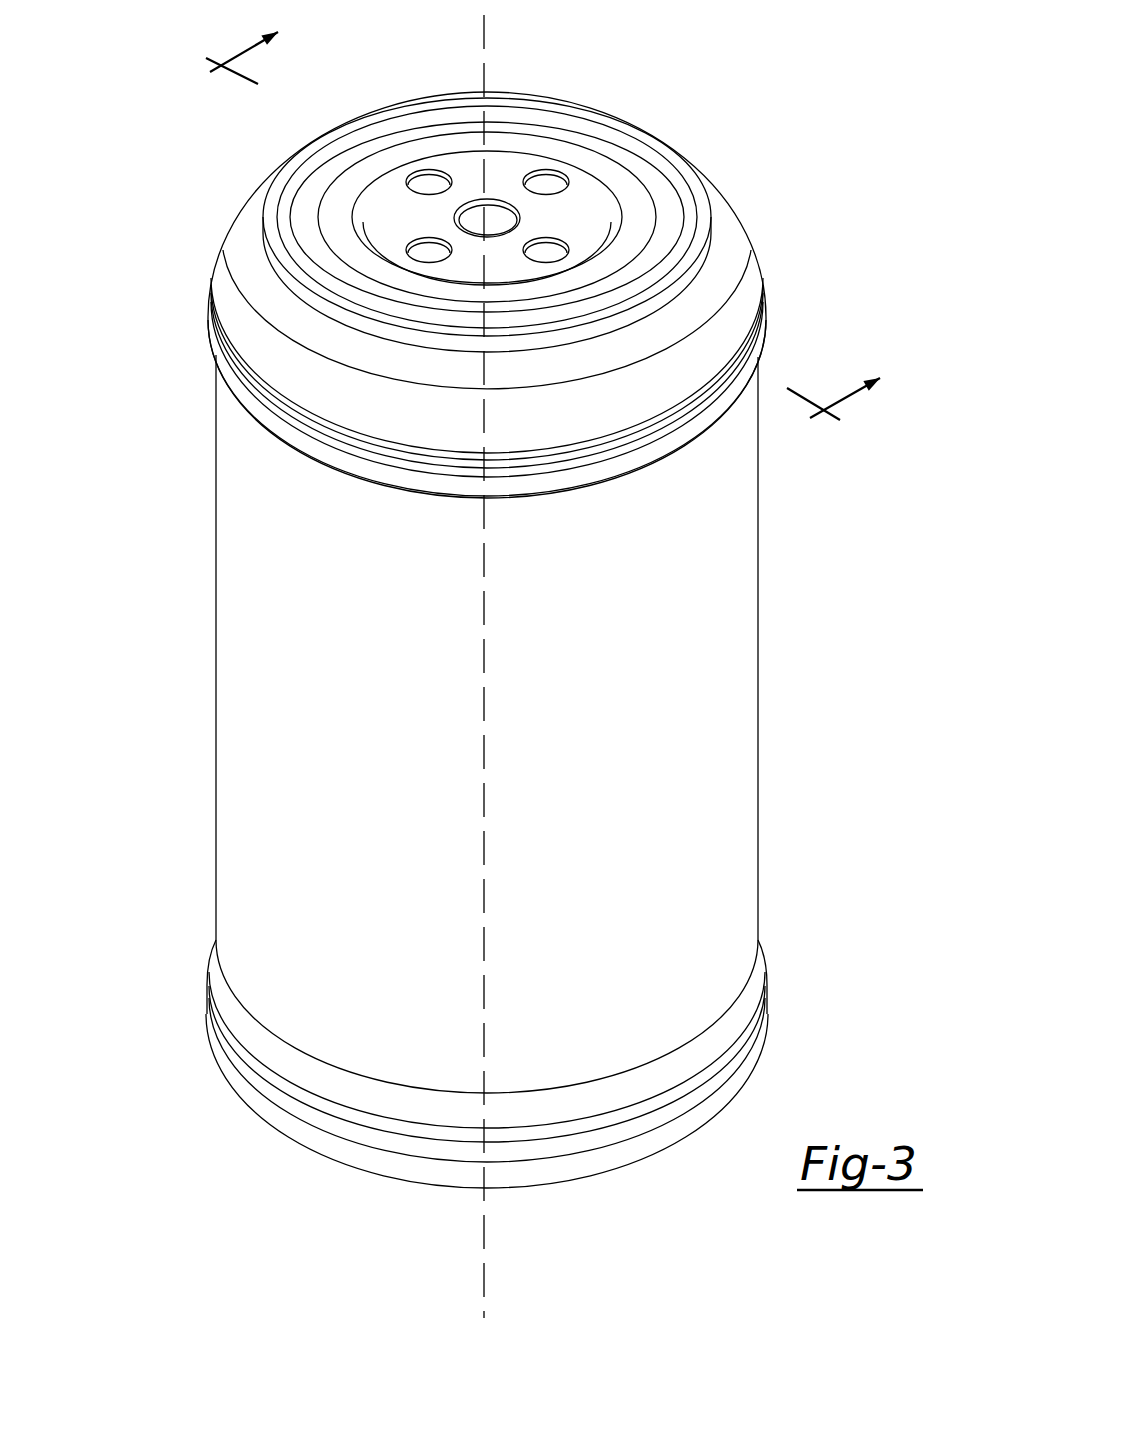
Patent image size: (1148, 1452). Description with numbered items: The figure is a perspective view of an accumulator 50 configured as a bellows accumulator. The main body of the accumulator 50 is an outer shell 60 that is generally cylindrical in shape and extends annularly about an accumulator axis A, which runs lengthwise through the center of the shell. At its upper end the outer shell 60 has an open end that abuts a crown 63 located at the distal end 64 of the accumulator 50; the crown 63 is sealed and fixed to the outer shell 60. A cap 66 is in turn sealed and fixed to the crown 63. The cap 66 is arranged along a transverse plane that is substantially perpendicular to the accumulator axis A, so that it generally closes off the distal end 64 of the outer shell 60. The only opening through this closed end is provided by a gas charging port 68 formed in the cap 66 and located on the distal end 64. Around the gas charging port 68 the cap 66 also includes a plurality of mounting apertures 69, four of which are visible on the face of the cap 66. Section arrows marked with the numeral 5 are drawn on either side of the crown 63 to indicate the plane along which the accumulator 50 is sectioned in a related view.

The section line 5- 5 is at (530, 239).
The accumulator axis A is at (484, 1228).
The accumulator 50 is at (188, 790).
The outer shell 60 is at (267, 659).
The crown 63 is at (263, 279).
The distal end 64 is at (766, 237).
The cap 66 is at (625, 195).
The gas charging port 68 is at (493, 207).
The mounting apertures 69 is at (428, 178).